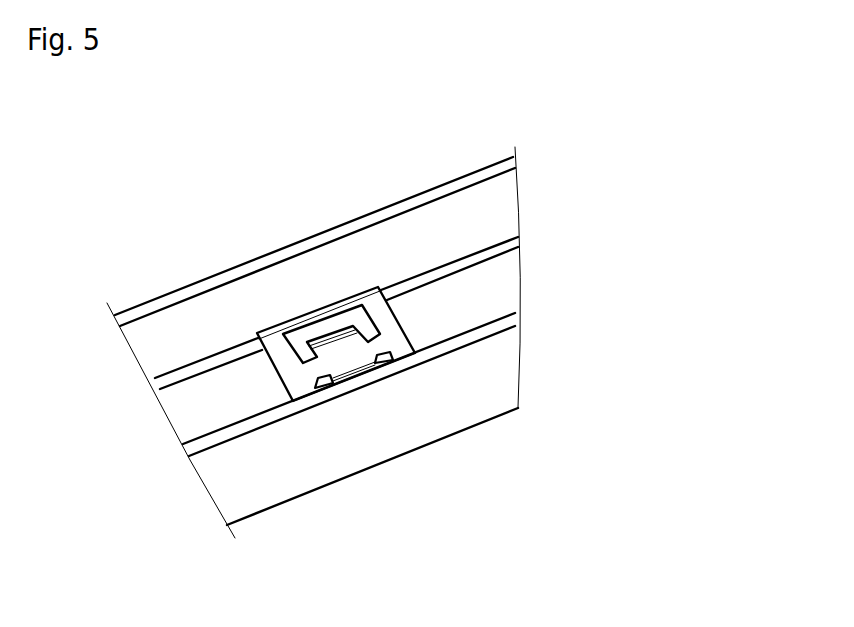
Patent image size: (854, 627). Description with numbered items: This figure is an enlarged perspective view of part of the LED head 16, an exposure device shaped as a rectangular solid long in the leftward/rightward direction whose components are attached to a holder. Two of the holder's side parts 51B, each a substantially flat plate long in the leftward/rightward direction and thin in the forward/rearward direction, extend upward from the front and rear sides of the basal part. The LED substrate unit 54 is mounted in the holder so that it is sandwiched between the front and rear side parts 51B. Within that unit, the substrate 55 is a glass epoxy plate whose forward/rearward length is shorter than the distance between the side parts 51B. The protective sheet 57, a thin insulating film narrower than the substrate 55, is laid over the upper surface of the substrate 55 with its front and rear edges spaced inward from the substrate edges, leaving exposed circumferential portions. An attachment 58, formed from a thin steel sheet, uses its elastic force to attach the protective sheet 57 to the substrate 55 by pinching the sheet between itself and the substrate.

The LED head 16 is at (52, 120).
The side parts 51B is at (178, 289).
The LED substrate unit 54 is at (447, 227).
The substrate 55 is at (202, 360).
The protective sheet 57 is at (203, 412).
The attachments 58 is at (372, 305).